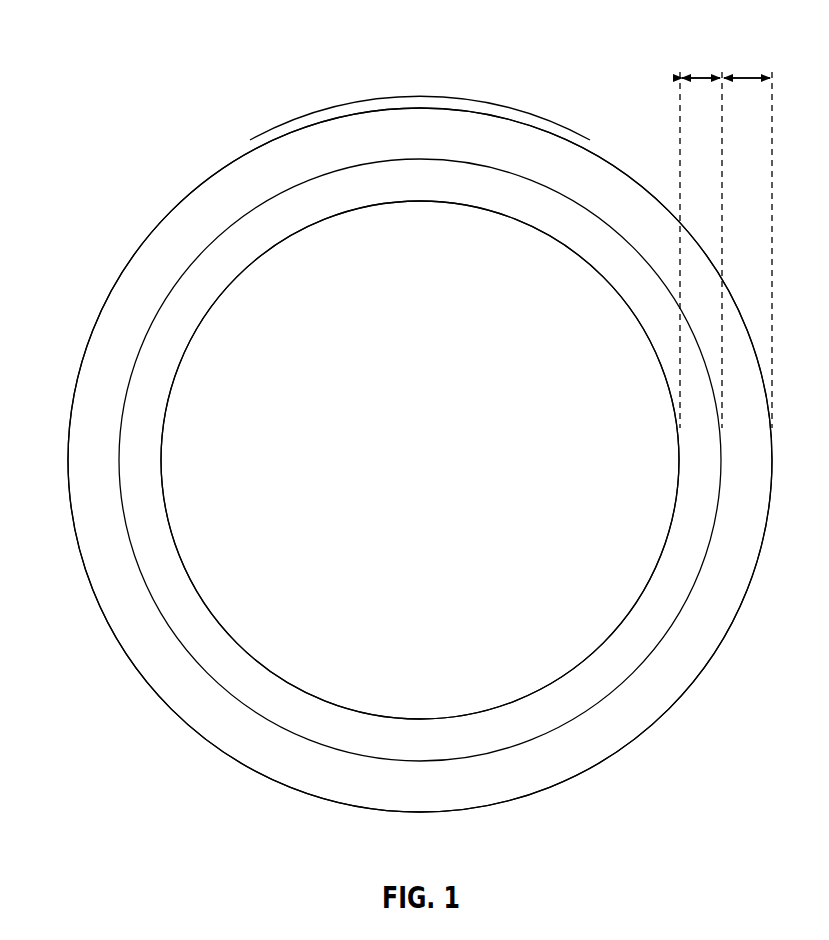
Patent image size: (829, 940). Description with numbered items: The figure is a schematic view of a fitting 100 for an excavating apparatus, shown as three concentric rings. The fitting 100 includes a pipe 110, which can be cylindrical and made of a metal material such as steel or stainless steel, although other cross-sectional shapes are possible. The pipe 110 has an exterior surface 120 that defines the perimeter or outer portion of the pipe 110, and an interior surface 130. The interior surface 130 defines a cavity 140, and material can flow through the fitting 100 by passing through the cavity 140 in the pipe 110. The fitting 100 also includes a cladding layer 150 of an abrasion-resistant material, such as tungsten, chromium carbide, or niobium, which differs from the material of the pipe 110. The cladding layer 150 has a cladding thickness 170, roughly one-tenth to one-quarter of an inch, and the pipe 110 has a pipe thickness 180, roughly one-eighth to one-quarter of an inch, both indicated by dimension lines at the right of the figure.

The fitting 100 is at (107, 136).
The pipe 110 is at (424, 127).
The exterior surface 120 is at (578, 135).
The interior surface 130 is at (560, 196).
The cavity 140 is at (604, 601).
The cladding layer 150 is at (432, 730).
The cladding thickness 170 is at (700, 74).
The pipe thickness 180 is at (746, 74).